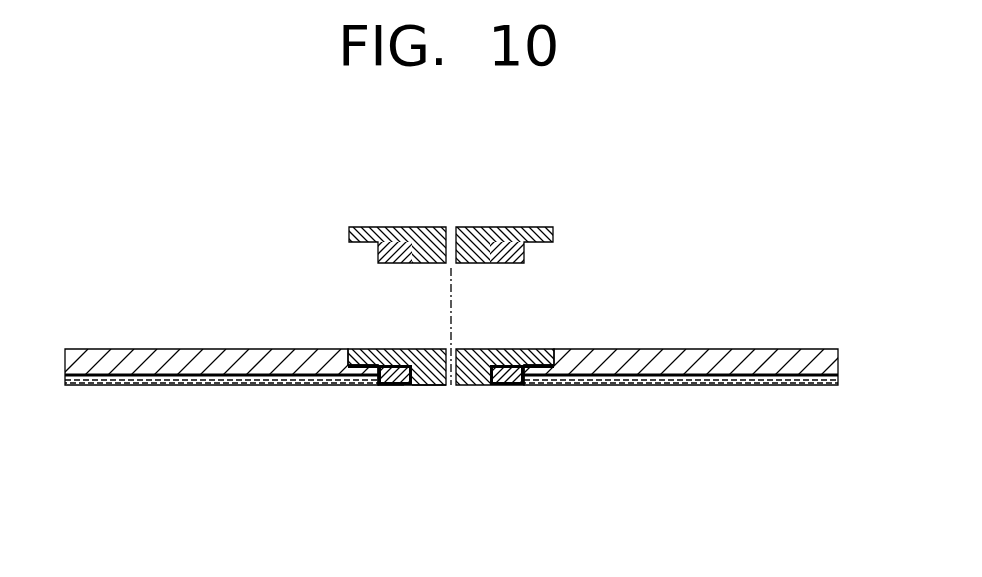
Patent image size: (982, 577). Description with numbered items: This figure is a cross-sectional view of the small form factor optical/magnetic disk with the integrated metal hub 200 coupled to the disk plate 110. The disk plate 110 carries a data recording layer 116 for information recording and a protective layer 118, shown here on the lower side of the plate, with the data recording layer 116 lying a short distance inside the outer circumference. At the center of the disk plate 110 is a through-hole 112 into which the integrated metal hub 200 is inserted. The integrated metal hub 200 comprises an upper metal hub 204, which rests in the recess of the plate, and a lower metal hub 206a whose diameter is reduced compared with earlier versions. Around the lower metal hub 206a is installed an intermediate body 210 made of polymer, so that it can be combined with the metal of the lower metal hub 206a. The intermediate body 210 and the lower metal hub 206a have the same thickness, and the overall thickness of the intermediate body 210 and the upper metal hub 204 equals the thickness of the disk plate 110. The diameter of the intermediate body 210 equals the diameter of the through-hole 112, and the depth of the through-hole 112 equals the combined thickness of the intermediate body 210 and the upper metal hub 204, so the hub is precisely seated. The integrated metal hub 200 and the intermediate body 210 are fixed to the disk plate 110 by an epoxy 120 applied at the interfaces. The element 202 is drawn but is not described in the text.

The disk plate 110 is at (793, 349).
The through-hole 112 is at (385, 386).
The data recording layer 116 is at (718, 386).
The protective layer 118 is at (621, 386).
The epoxy 120 is at (521, 386).
The integrated metal hub 200 is at (553, 210).
The semiconductor body 202 is at (429, 347).
The upper metal hub 204 is at (352, 346).
The lower metal hub 206a is at (430, 386).
The intermediate body 210 is at (397, 386).